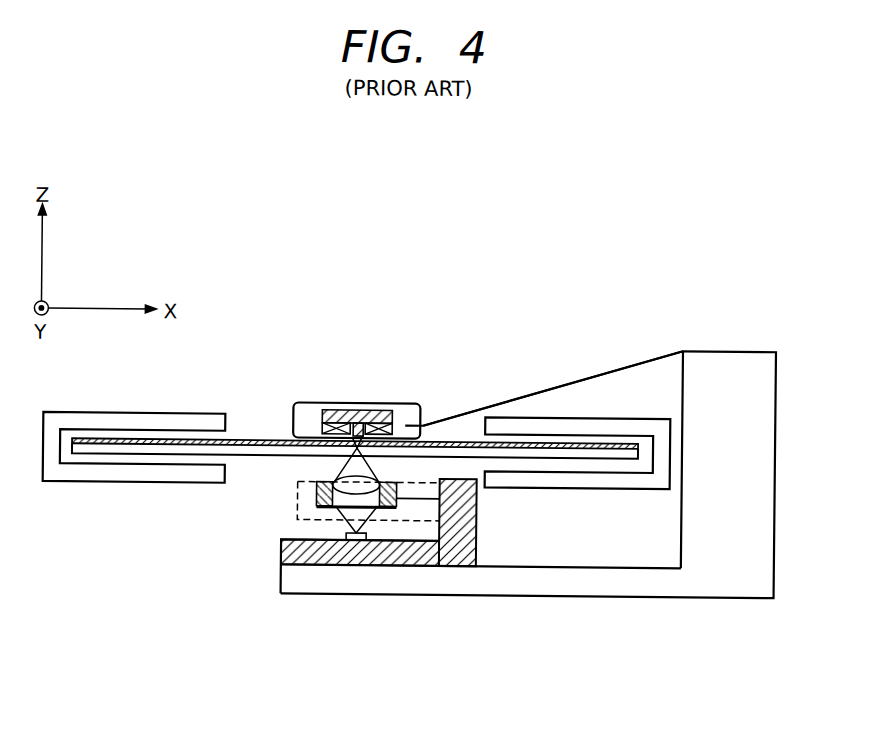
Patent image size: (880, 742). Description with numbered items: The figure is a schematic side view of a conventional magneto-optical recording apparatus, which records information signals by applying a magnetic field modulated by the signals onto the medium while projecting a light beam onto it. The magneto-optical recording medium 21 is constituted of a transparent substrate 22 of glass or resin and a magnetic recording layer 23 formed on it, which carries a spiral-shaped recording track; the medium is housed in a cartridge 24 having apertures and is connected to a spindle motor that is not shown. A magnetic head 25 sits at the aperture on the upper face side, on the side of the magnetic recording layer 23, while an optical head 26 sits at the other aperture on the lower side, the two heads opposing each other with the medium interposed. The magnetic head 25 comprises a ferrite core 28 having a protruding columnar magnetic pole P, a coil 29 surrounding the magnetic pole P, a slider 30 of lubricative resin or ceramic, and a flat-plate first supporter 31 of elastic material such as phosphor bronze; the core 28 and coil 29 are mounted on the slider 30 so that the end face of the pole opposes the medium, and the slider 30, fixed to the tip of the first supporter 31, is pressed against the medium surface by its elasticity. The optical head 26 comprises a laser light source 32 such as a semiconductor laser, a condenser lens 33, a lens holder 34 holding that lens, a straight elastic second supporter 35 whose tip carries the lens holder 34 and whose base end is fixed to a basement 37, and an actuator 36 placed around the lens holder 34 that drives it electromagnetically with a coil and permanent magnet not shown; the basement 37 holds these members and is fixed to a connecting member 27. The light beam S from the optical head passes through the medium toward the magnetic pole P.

The magneto-optical recording medium 21 is at (354, 500).
The substrate 22 is at (98, 449).
The magnetic recording layer 23 is at (80, 524).
The cartridge 24 is at (123, 417).
The magnetic head 25 is at (414, 368).
The optical head 26 is at (364, 572).
The connecting member 27 is at (738, 590).
The core 28 is at (355, 411).
The coil 29 is at (378, 384).
The slider 30 is at (413, 406).
The first supporter 31 is at (534, 385).
The laser light source 32 is at (357, 558).
The condenser lens 33 is at (338, 506).
The lens holder 34 is at (415, 499).
The second supporter 35 is at (393, 583).
The actuator 36 is at (296, 500).
The basement 37 is at (466, 560).
The magnetic pole P is at (353, 411).
The light beam S is at (352, 450).